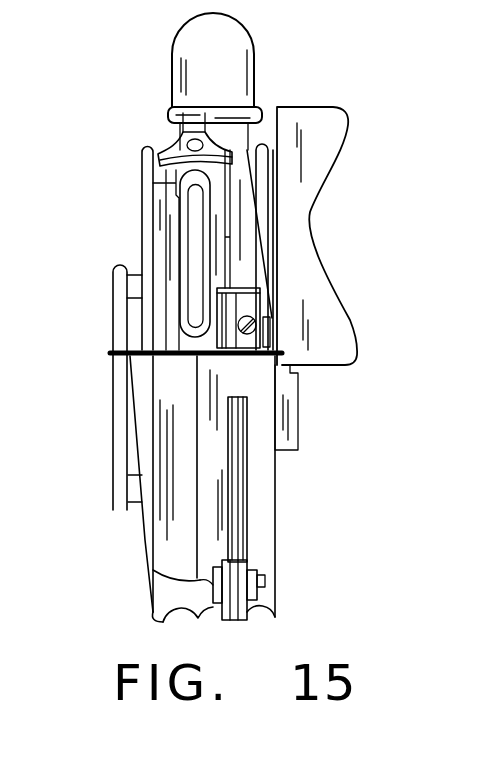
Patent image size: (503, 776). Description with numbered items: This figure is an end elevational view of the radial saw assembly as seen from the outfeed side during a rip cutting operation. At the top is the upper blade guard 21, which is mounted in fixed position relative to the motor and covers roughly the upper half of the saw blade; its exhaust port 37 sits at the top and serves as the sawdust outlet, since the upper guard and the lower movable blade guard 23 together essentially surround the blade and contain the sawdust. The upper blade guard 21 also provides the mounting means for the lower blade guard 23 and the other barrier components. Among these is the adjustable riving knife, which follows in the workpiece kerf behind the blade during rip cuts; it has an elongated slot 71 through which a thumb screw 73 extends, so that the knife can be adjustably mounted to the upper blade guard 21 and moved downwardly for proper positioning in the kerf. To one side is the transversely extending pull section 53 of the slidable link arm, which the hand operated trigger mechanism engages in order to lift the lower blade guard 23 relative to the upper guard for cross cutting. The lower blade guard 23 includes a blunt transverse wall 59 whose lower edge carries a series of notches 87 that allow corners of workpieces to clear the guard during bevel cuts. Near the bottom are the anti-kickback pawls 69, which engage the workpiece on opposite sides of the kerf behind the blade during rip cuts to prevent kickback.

The exhaust port 37 is at (215, 63).
The thumb screw 73 is at (172, 148).
The upper blade guard 21 is at (147, 177).
The elongated slot 71 is at (193, 225).
The pull section 53 is at (297, 266).
The lower blade guard 23 is at (155, 385).
The blunt transverse wall 59 is at (172, 592).
The notches 87 is at (188, 617).
The anti-kickback pawls 69 is at (224, 605).